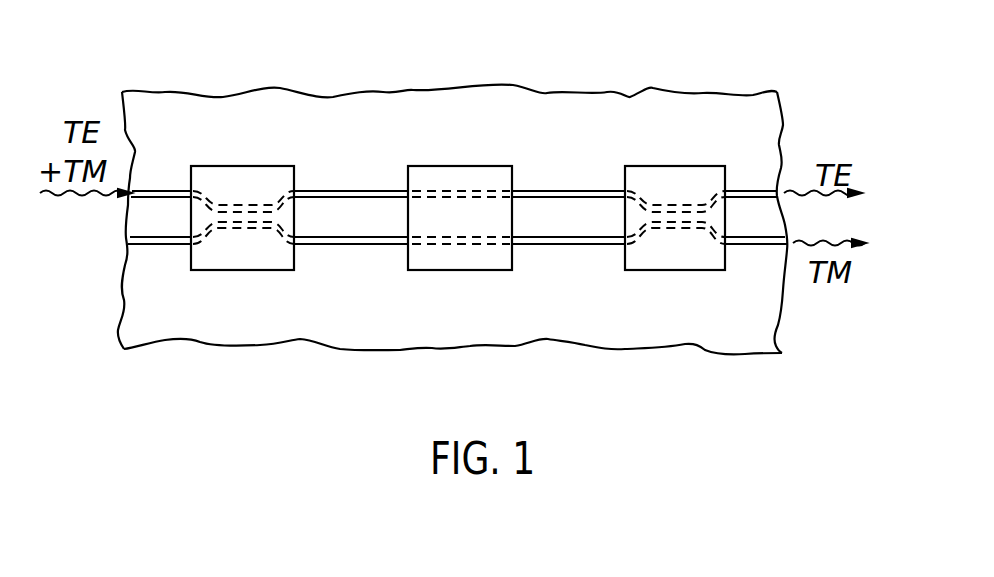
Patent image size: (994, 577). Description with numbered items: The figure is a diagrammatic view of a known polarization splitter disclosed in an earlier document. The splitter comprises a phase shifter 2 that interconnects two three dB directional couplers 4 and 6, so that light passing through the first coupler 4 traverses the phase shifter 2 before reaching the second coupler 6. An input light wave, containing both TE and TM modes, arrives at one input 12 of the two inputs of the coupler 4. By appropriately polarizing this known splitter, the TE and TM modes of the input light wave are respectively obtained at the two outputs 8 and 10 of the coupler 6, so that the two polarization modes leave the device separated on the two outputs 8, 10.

The phase shifter 2 is at (462, 175).
The 3 dB directional coupler 4 is at (272, 175).
The 3 dB directional coupler 6 is at (665, 173).
The output 8 is at (750, 193).
The output 10 is at (752, 243).
The input 12 is at (162, 196).